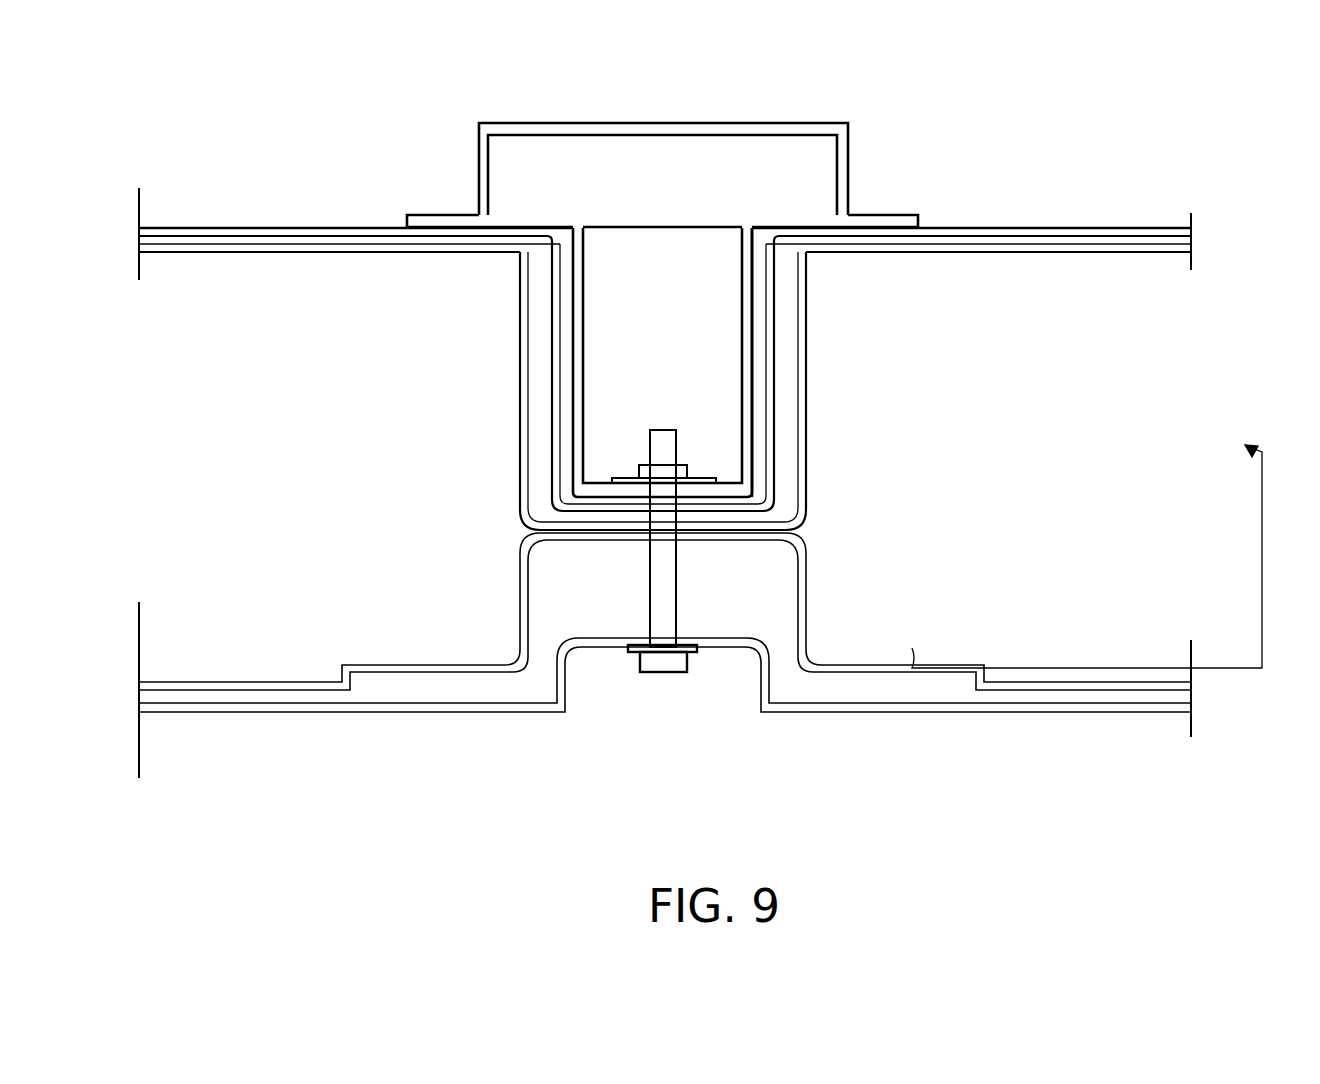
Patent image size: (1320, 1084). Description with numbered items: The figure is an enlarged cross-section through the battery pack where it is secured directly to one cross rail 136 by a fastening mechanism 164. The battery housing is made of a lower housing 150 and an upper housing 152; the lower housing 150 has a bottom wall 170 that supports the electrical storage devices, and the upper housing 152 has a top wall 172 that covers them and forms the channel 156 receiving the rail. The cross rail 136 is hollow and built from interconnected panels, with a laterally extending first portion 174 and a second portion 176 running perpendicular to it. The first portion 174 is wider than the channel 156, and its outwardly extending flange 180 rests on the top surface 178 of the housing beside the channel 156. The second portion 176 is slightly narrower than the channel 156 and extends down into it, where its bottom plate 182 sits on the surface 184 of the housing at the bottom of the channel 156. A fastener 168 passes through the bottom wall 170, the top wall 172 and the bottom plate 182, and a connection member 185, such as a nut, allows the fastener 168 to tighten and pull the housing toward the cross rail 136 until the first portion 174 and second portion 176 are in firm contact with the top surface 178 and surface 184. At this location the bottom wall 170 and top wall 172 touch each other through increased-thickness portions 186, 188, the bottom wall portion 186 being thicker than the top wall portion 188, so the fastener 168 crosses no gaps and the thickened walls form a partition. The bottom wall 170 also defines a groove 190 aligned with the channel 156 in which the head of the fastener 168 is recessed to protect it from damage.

The cross rail 136 is at (507, 124).
The lower housing 150 is at (978, 706).
The upper housing 152 is at (1040, 229).
The channel 156 is at (758, 326).
The fastening mechanism 164 is at (658, 694).
The fastener 168 is at (662, 441).
The bottom wall 170 is at (245, 228).
The top wall 172 is at (842, 698).
The first portion 174 is at (690, 153).
The second portion 176 is at (722, 373).
The top surface 178 is at (413, 226).
The flange 180 is at (906, 216).
The bottom plate 182 is at (735, 490).
The surface 184 is at (580, 492).
The connection member 185 is at (637, 470).
The increased-thickness portion 186 is at (787, 437).
The increased-thickness portion 188 is at (785, 590).
The groove 190 is at (607, 687).